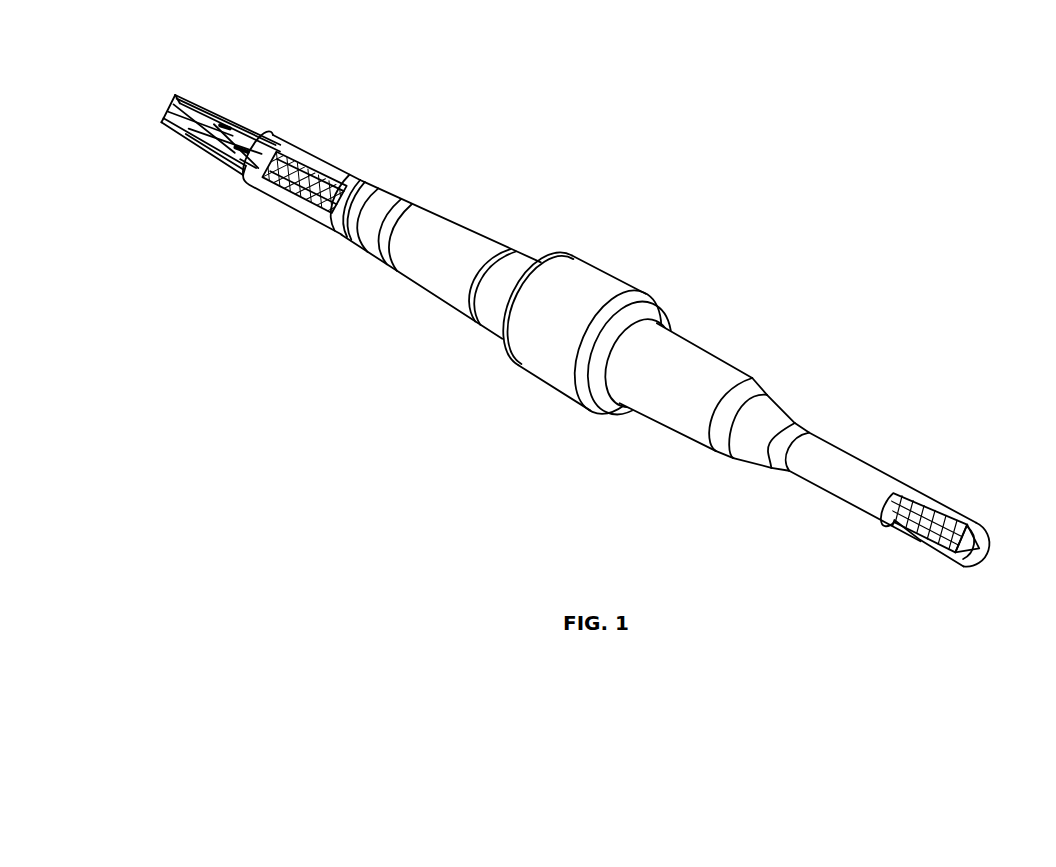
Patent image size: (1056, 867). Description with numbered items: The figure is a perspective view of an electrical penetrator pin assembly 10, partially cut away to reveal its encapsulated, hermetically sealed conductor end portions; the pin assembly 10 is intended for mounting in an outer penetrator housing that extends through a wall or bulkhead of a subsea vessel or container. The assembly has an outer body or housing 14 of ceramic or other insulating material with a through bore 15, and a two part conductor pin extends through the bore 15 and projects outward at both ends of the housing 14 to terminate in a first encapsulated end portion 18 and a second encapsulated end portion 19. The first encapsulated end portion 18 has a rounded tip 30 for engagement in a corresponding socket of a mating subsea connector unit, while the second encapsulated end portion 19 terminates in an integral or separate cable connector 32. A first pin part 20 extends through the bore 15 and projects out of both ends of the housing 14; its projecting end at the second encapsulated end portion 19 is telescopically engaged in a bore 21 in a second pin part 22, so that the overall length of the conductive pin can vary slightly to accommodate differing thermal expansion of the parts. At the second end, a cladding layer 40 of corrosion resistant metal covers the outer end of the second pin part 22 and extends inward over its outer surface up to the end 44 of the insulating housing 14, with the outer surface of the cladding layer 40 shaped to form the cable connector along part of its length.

The electrical penetrator pin assembly 10 is at (373, 271).
The outer body or housing 14 is at (601, 291).
The through bore 15 is at (362, 178).
The first encapsulated end portion 18 is at (895, 539).
The second encapsulated end portion 19 is at (236, 171).
The first pin part 20 is at (294, 196).
The bore 21 is at (292, 171).
The second pin part 22 is at (224, 127).
The rounded tip 30 is at (988, 538).
The cable connector 32 is at (195, 100).
The cladding layer 40 is at (283, 147).
The end of insulating housing 44 is at (328, 182).